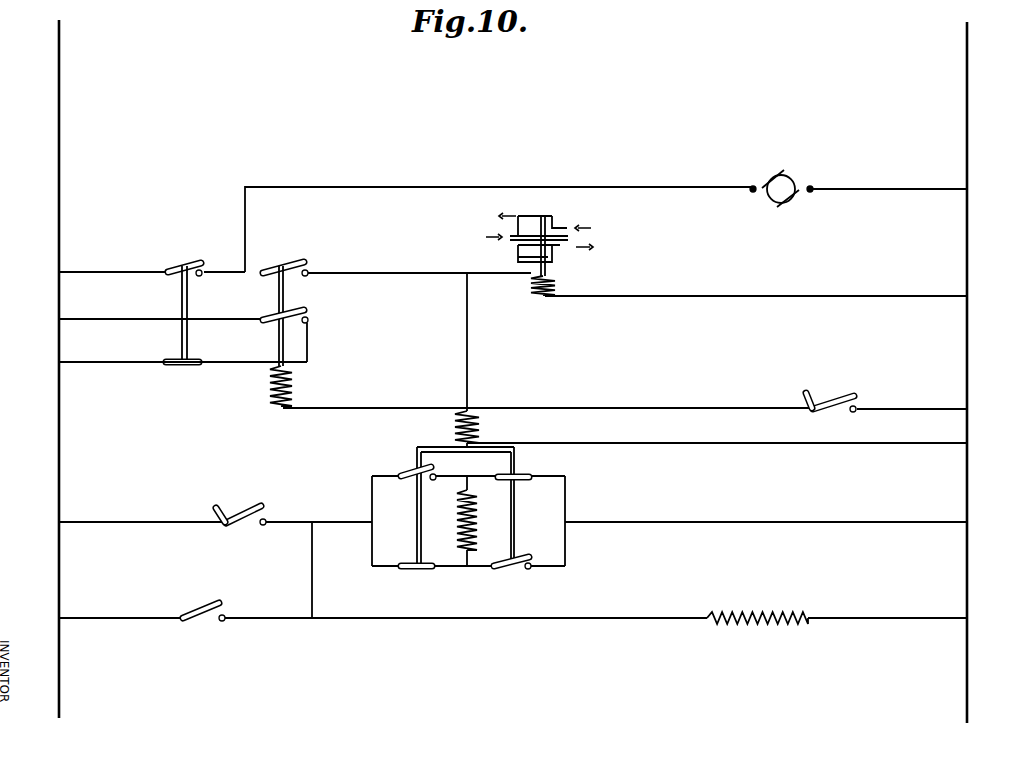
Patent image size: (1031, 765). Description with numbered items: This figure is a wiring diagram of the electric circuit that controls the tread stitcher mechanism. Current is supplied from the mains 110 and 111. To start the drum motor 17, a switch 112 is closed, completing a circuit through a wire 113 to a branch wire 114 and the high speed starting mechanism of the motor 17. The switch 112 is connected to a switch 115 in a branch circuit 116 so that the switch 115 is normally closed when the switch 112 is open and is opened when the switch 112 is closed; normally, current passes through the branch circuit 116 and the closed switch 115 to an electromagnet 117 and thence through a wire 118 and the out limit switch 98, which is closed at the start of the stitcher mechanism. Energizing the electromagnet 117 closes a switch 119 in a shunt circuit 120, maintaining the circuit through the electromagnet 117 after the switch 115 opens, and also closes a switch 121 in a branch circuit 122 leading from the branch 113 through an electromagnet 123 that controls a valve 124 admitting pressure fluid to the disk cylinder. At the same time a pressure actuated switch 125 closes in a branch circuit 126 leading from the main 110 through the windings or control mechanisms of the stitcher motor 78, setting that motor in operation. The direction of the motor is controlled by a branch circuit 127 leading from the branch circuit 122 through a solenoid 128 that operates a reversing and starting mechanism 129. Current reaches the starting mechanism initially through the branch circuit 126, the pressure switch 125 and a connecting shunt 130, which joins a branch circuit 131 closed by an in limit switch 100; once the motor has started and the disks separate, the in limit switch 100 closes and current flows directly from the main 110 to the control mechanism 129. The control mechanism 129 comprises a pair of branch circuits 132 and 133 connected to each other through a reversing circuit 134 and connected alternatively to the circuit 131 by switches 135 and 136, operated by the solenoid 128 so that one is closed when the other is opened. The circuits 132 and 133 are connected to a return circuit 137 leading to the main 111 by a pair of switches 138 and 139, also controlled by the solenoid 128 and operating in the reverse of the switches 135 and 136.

The main 110 is at (59, 133).
The main 111 is at (968, 134).
The drum motor 17 is at (796, 180).
The branch wire 114 is at (245, 206).
The wire 113 is at (92, 270).
The switch 112 is at (186, 254).
The switch 115 is at (184, 365).
The branch circuit 116 is at (96, 363).
The shunt circuit 120 is at (112, 320).
The switch 121 is at (290, 263).
The switch 119 is at (298, 312).
The electromagnet 117 is at (293, 386).
The wire 118 is at (390, 408).
The branch circuit 122 is at (378, 273).
The branch circuit 127 is at (468, 350).
The valve 124 is at (552, 217).
The electromagnet 123 is at (560, 284).
The out limit switch 98 is at (838, 396).
The solenoid 128 is at (480, 431).
The reversing and starting mechanism 129 is at (565, 491).
The switch 136 is at (412, 466).
The branch circuit 132 is at (447, 476).
The switch 139 is at (518, 476).
The reversing circuit 134 is at (460, 523).
The switch 135 is at (412, 571).
The branch circuit 133 is at (443, 568).
The switch 138 is at (520, 569).
The branch circuit 131 is at (322, 522).
The in limit switch 100 is at (241, 508).
The connecting shunt 130 is at (313, 582).
The return circuit 137 is at (668, 523).
The pressure actuated switch 125 is at (207, 602).
The branch circuit 126 is at (380, 619).
The stitcher motor 78 is at (758, 615).